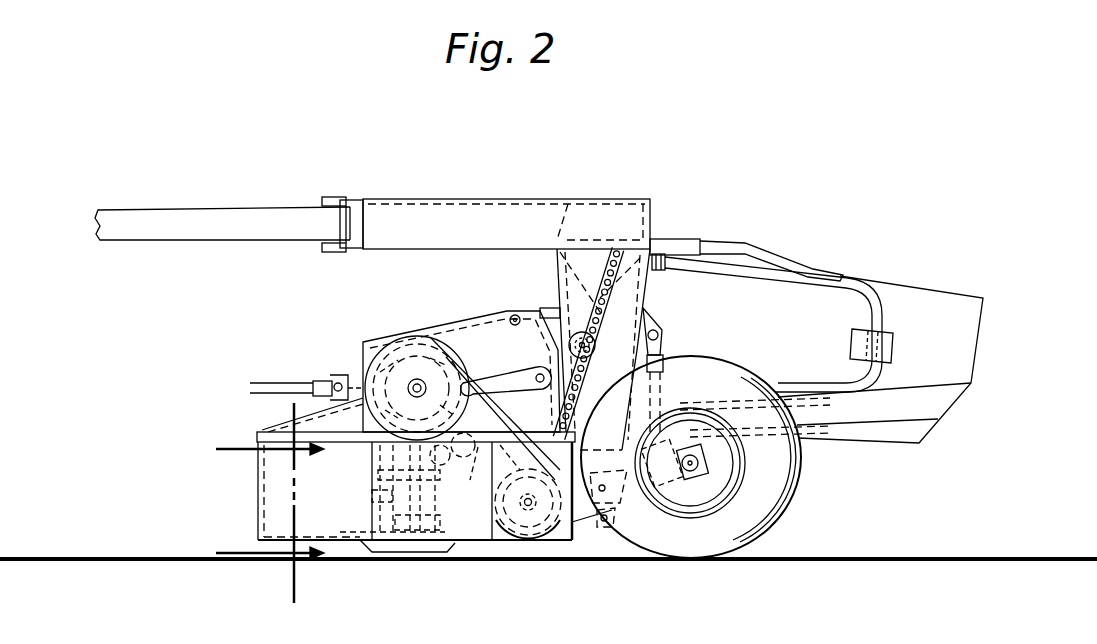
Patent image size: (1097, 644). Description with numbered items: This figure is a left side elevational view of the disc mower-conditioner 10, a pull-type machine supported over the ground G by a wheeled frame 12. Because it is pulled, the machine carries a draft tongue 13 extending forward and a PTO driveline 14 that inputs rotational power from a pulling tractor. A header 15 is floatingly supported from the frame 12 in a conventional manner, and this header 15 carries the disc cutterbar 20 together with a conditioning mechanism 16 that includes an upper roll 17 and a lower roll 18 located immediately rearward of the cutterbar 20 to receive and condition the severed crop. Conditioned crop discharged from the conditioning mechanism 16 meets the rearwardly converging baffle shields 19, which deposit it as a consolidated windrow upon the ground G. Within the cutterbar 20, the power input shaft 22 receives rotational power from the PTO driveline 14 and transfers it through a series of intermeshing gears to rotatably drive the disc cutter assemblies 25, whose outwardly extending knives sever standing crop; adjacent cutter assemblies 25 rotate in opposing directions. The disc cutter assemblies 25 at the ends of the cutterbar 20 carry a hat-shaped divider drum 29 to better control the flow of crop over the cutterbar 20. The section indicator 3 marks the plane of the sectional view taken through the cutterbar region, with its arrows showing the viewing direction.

The disc mower-conditioner 10 is at (758, 158).
The wheeled frame 12 is at (622, 203).
The draft tongue 13 is at (207, 222).
The PTO driveline 14 is at (280, 383).
The header 15 is at (378, 321).
The conditioning mechanism 16 is at (490, 548).
The upper roll 17 is at (513, 412).
The lower roll 18 is at (545, 545).
The baffle shields 19 is at (966, 342).
The disc cutterbar 20 is at (365, 550).
The power input shaft 22 is at (407, 490).
The disc cutter assemblies 25 is at (365, 530).
The hat-shaped divider drum 29 is at (382, 498).
The section line 3- 3 is at (259, 503).
The ground G is at (965, 557).